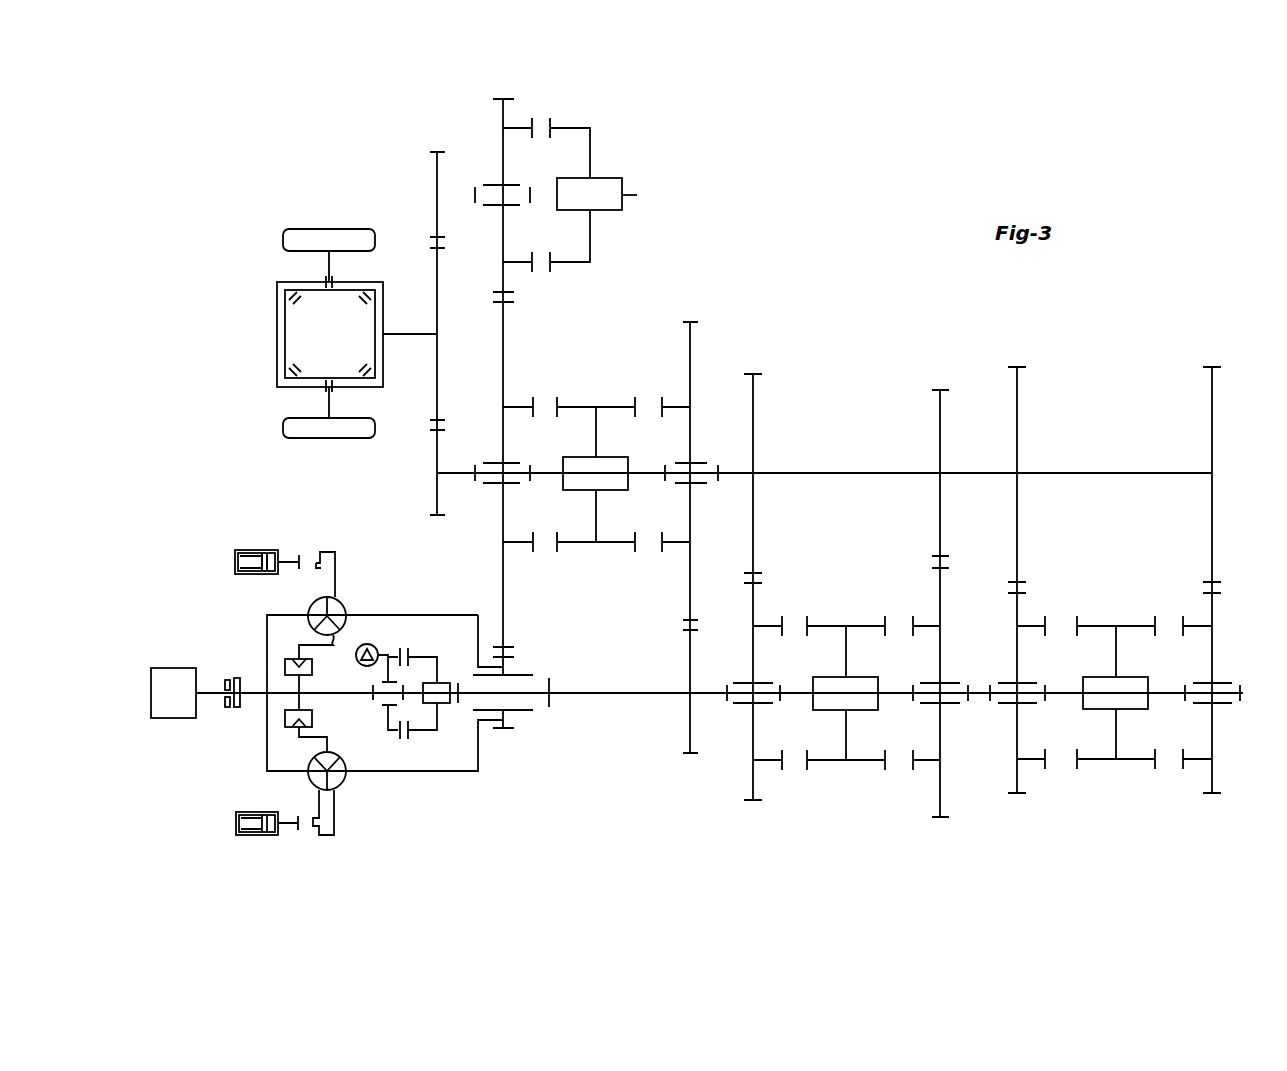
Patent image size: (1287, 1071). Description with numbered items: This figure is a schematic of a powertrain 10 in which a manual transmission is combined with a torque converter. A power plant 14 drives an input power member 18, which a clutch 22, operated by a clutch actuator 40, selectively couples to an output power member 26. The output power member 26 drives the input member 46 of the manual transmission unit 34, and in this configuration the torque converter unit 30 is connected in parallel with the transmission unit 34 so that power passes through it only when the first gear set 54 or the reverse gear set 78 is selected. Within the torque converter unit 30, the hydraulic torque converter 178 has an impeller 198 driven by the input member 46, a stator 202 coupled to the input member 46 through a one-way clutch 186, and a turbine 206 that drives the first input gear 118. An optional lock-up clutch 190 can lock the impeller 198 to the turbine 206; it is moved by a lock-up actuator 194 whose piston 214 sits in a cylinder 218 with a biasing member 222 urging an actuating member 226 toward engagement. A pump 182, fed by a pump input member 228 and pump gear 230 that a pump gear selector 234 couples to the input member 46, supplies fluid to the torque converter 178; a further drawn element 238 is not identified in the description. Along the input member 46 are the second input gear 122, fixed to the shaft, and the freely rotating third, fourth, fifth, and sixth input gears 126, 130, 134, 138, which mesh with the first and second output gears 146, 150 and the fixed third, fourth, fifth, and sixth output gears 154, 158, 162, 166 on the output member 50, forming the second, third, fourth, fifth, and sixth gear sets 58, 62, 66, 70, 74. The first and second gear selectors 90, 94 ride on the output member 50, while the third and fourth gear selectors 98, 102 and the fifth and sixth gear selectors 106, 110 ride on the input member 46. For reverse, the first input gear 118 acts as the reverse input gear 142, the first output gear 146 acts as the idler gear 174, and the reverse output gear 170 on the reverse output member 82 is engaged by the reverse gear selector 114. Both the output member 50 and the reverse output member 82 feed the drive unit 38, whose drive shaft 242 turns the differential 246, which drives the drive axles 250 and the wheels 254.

The powertrain 10 is at (237, 158).
The power plant 14 is at (173, 668).
The input power member 18 is at (208, 695).
The clutch 22 is at (238, 678).
The output power member 26 is at (250, 695).
The torque converter unit 30 is at (390, 843).
The manual transmission unit 34 is at (892, 210).
The drive unit 38 is at (243, 313).
The clutch actuator 40 is at (226, 680).
The input member 46 is at (628, 690).
The output member 50 is at (1113, 473).
The first gear set 54 is at (503, 730).
The second gear set 58 is at (690, 318).
The third gear set 62 is at (1018, 363).
The fourth gear set 66 is at (1210, 363).
The fifth gear set 70 is at (753, 372).
The sixth gear set 74 is at (938, 386).
The reverse gear set 78 is at (500, 96).
The reverse output member 82 is at (628, 195).
The first gear selector 90 is at (570, 405).
The second gear selector 94 is at (622, 405).
The third gear selector 98 is at (1090, 625).
The fourth gear selector 102 is at (1142, 625).
The fifth gear selector 106 is at (820, 625).
The sixth gear selector 110 is at (872, 625).
The reverse gear selector 114 is at (566, 126).
The first input gear 118 is at (510, 715).
The second input gear 122 is at (690, 723).
The third input gear 126 is at (1017, 775).
The fourth input gear 130 is at (1212, 773).
The fifth input gear 134 is at (753, 782).
The sixth input gear 138 is at (940, 790).
The reverse input gear 142 is at (505, 670).
The first output gear 146 is at (503, 598).
The second output gear 150 is at (690, 345).
The third output gear 154 is at (1017, 403).
The fourth output gear 158 is at (1212, 400).
The fifth output gear 162 is at (753, 400).
The sixth output gear 166 is at (940, 428).
The reverse output gear 170 is at (503, 112).
The idler gear 174 is at (503, 330).
The hydraulic torque converter 178 is at (350, 788).
The pump 182 is at (360, 665).
The one-way clutch 186 is at (315, 718).
The lock-up clutch 190 is at (336, 837).
The lock-up actuator 194 is at (243, 840).
The impeller 198 is at (310, 605).
The stator 202 is at (316, 672).
The turbine 206 is at (343, 601).
The piston 214 is at (262, 552).
The cylinder 218 is at (235, 562).
The biasing member 222 is at (248, 552).
The actuating member 226 is at (298, 553).
The pump input member 228 is at (390, 652).
The pump gear 230 is at (395, 652).
The pump gear selector 234 is at (425, 730).
The piston rod 238 is at (272, 553).
The drive shaft 242 is at (405, 334).
The differential 246 is at (277, 352).
The drive axles 250 is at (325, 272).
The wheels 254 is at (328, 230).